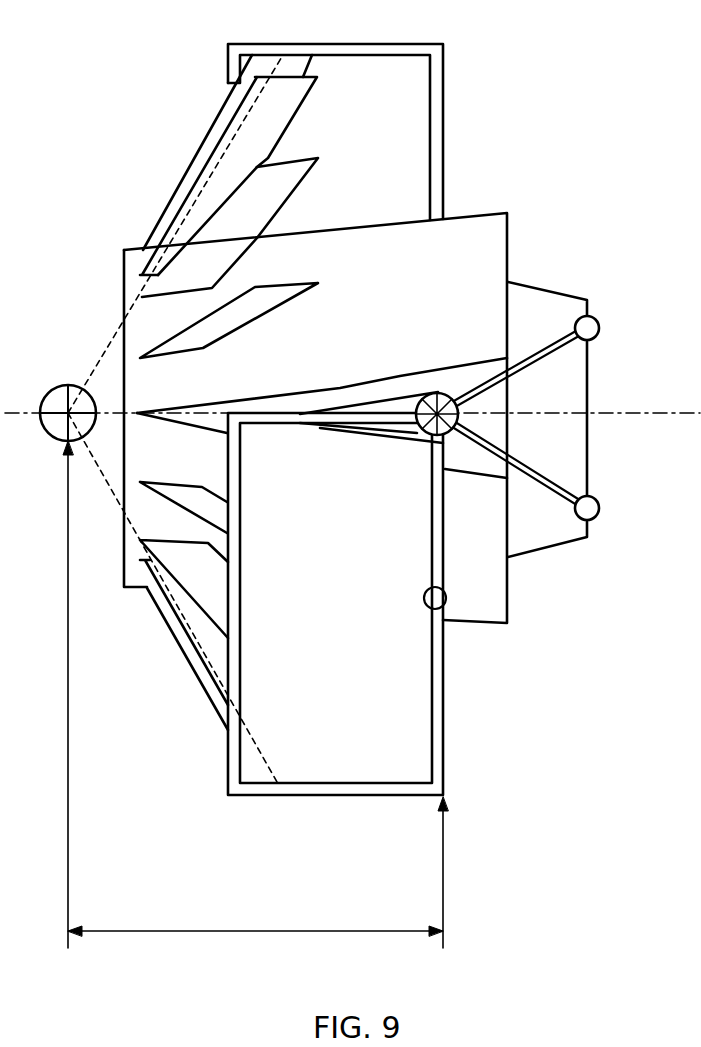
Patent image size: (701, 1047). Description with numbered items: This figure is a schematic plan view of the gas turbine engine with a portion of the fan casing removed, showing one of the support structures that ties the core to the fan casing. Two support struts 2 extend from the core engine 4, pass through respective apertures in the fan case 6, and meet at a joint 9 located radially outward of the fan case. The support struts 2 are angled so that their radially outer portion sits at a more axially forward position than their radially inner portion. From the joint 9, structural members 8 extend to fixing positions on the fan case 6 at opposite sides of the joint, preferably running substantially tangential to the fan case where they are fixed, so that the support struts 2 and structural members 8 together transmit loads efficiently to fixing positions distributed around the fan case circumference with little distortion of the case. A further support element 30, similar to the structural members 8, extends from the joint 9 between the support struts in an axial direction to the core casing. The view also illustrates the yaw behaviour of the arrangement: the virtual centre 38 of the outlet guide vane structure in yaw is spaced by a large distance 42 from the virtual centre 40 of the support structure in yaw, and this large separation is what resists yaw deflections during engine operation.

The support struts 2 is at (547, 352).
The core engine 4 is at (590, 388).
The fan case 6 is at (437, 722).
The structural members 8 is at (435, 523).
The joint 9 is at (434, 402).
The support element 30 is at (370, 407).
The virtual centre of the OGV structure in yaw 38 is at (66, 411).
The virtual centre of the support structure in yaw 40 is at (443, 437).
The distance 42 is at (240, 931).